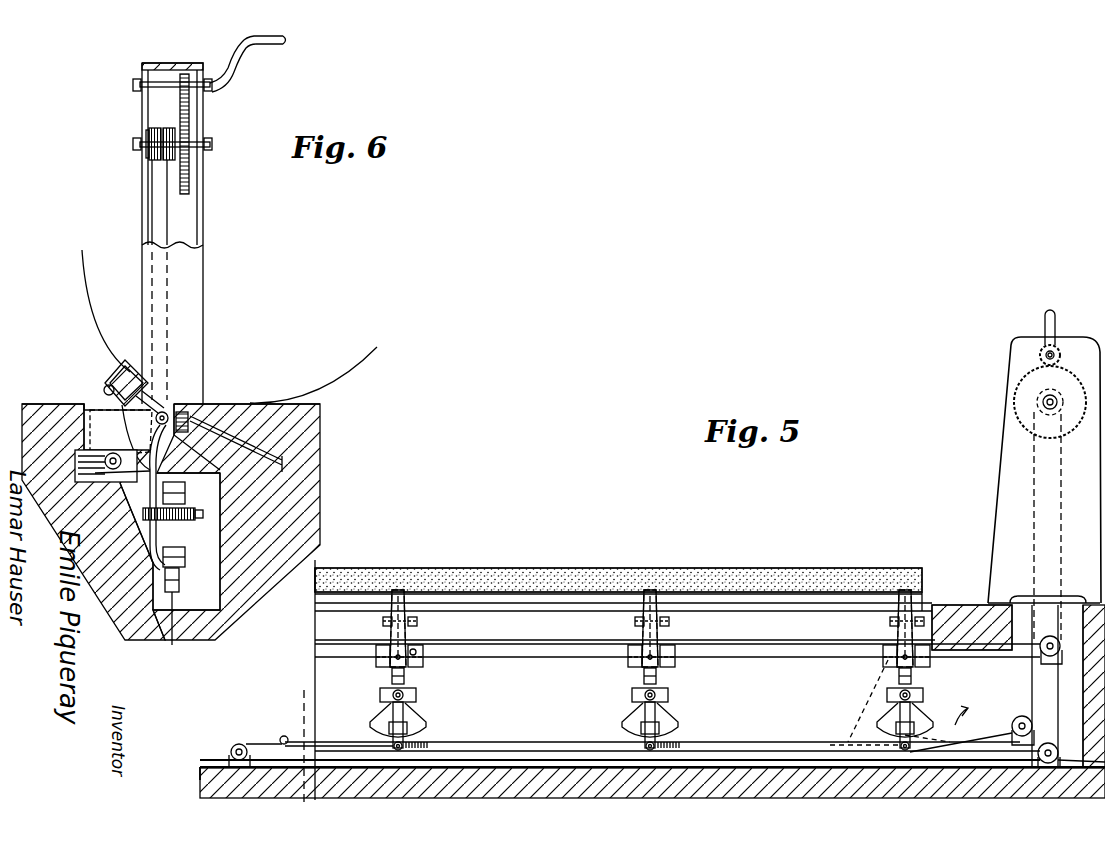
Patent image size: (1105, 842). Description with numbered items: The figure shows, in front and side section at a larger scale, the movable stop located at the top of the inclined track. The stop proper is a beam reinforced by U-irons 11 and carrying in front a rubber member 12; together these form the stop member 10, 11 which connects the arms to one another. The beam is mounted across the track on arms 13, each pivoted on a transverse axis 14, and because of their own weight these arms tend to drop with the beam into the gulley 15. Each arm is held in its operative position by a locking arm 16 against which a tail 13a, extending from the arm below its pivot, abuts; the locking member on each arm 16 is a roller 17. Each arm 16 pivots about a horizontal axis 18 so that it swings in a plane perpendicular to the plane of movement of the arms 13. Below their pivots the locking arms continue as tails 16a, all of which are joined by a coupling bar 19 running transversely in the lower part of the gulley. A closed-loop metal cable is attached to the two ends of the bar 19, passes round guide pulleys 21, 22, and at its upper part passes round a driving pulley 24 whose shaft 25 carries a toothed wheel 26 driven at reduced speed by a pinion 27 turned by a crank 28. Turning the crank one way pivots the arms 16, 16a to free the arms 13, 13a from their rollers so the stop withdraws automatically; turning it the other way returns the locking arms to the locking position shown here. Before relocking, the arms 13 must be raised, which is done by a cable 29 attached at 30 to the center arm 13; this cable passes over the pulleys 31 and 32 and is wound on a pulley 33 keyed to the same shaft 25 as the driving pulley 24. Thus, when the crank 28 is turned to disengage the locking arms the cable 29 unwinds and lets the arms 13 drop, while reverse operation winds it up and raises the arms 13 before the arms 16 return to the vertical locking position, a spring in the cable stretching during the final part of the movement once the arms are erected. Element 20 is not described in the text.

In FIG. 6, the stop member 10 is at (118, 393).
In FIG. 6, the U-irons 11 is at (116, 376).
In FIG. 5, the U-irons 11 is at (832, 603).
In FIG. 6, the rubber member 12 is at (133, 363).
In FIG. 5, the rubber member 12 is at (740, 590).
In FIG. 6, the arms 13 is at (160, 396).
In FIG. 5, the arms 13 is at (395, 624).
In FIG. 6, the tail 13a is at (232, 477).
In FIG. 5, the tail 13a is at (646, 650).
In FIG. 6, the transverse axis 14 is at (192, 406).
In FIG. 5, the transverse axis 14 is at (419, 621).
In FIG. 6, the gulley 15 is at (82, 404).
In FIG. 6, the locking arm 16 is at (187, 488).
In FIG. 5, the locking arm 16 is at (406, 676).
In FIG. 6, the tails 16a is at (186, 558).
In FIG. 5, the tails 16a is at (410, 718).
In FIG. 6, the roller 17 is at (186, 500).
In FIG. 5, the roller 17 is at (391, 675).
In FIG. 6, the horizontal axis 18 is at (178, 526).
In FIG. 5, the horizontal axis 18 is at (384, 699).
In FIG. 6, the coupling bar 19 is at (182, 631).
In FIG. 5, the coupling bar 19 is at (553, 742).
In FIG. 6, the cable 20 is at (172, 226).
In FIG. 5, the cable 20 is at (985, 742).
In FIG. 5, the guide pulley 21 is at (1018, 716).
In FIG. 5, the guide pulley 22 is at (240, 744).
In FIG. 6, the driving pulley 24 is at (165, 130).
In FIG. 5, the driving pulley 24 is at (1040, 402).
In FIG. 6, the shaft 25 is at (133, 145).
In FIG. 5, the shaft 25 is at (1046, 407).
In FIG. 6, the toothed wheel 26 is at (190, 178).
In FIG. 5, the toothed wheel 26 is at (1020, 382).
In FIG. 6, the pinion 27 is at (180, 76).
In FIG. 5, the pinion 27 is at (1043, 348).
In FIG. 6, the crank 28 is at (272, 46).
In FIG. 5, the crank 28 is at (1056, 332).
In FIG. 6, the cable 29 is at (150, 218).
In FIG. 5, the cable 29 is at (565, 659).
In FIG. 6, the attachment point 30 is at (100, 500).
In FIG. 5, the attachment point 30 is at (385, 655).
In FIG. 6, the pulley 31 is at (76, 462).
In FIG. 5, the pulley 31 is at (420, 650).
In FIG. 5, the pulley 32 is at (1040, 632).
In FIG. 6, the pulley 33 is at (147, 160).